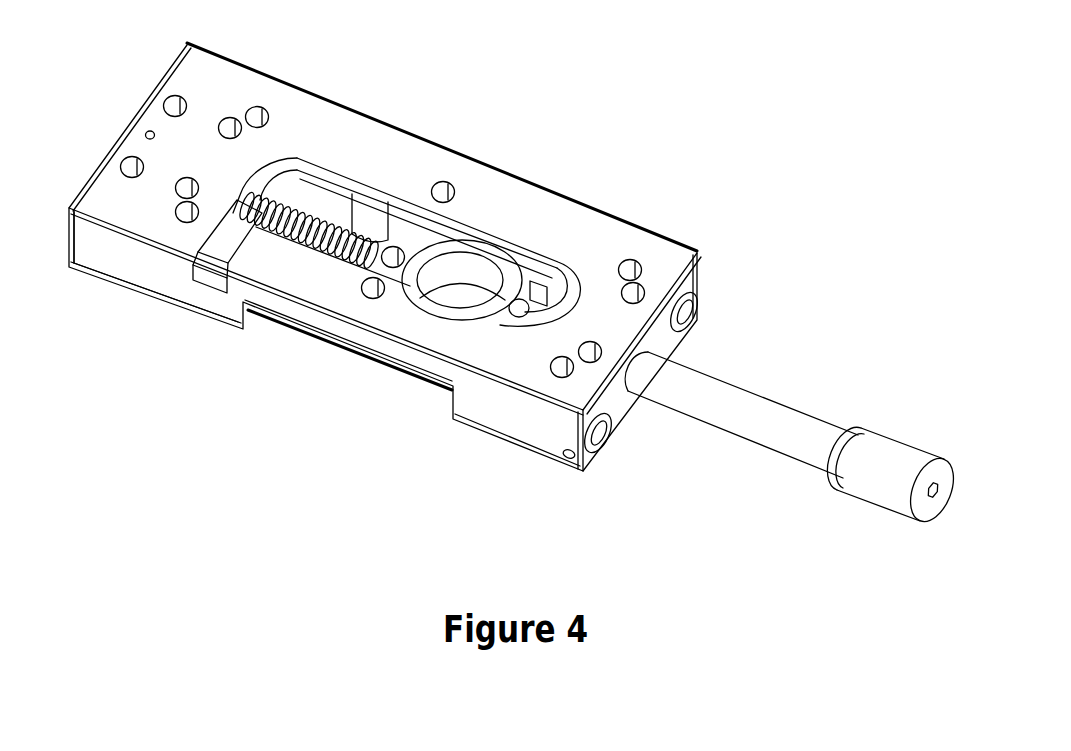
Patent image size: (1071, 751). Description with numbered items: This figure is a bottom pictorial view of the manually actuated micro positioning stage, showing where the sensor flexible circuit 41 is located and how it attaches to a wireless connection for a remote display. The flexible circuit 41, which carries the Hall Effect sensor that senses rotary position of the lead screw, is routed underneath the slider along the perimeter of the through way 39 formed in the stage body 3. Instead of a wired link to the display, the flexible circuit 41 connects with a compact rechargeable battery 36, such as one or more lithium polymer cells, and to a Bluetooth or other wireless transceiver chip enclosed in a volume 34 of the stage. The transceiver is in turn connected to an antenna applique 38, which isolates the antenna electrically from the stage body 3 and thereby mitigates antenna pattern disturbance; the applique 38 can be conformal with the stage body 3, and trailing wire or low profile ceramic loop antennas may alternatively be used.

The stage body 3 is at (88, 177).
The volume 34 is at (252, 226).
The compact rechargeable battery 36 is at (261, 224).
The antenna applique 38 is at (103, 253).
The through way 39 is at (443, 300).
The flexible circuit 41 is at (545, 300).